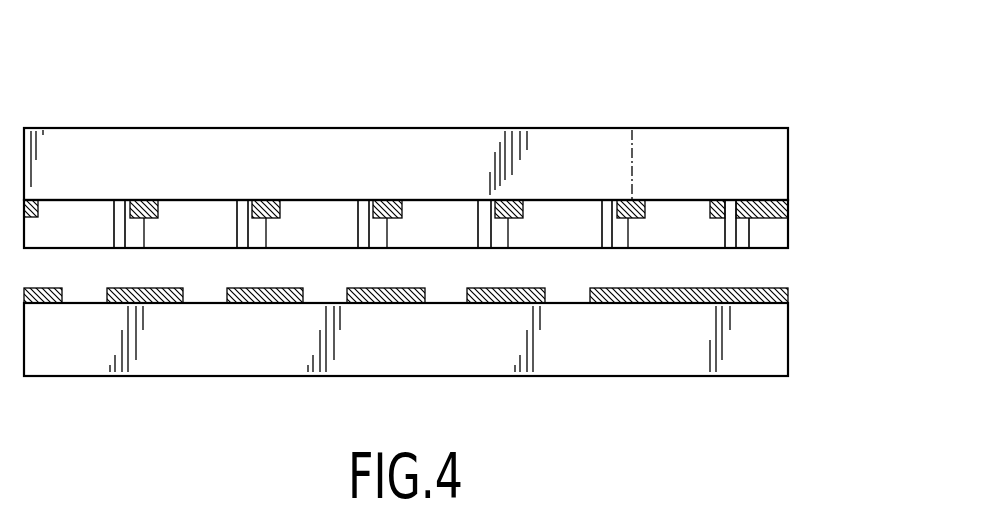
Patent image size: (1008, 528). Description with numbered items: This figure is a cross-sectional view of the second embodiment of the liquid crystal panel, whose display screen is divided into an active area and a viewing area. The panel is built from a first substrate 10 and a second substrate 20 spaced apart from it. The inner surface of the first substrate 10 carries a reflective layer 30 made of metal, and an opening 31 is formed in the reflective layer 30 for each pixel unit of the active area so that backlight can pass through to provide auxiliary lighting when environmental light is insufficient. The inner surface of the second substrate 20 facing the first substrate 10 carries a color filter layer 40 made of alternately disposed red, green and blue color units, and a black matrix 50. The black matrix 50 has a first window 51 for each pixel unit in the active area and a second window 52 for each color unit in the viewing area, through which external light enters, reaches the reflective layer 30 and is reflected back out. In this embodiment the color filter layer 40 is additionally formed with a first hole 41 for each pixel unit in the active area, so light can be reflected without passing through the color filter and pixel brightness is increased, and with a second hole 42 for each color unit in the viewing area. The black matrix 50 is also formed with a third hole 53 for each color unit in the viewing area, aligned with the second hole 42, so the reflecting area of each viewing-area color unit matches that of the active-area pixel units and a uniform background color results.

The first substrate 10 is at (176, 380).
The second substrate 20 is at (512, 118).
The reflective layer 30 is at (797, 304).
The opening 31 is at (588, 303).
The color filter layer 40 is at (790, 237).
The first hole 41 is at (240, 237).
The second hole 42 is at (728, 237).
The black matrix 50 is at (800, 203).
The first window 51 is at (168, 206).
The second window 52 is at (653, 206).
The third hole 53 is at (730, 205).